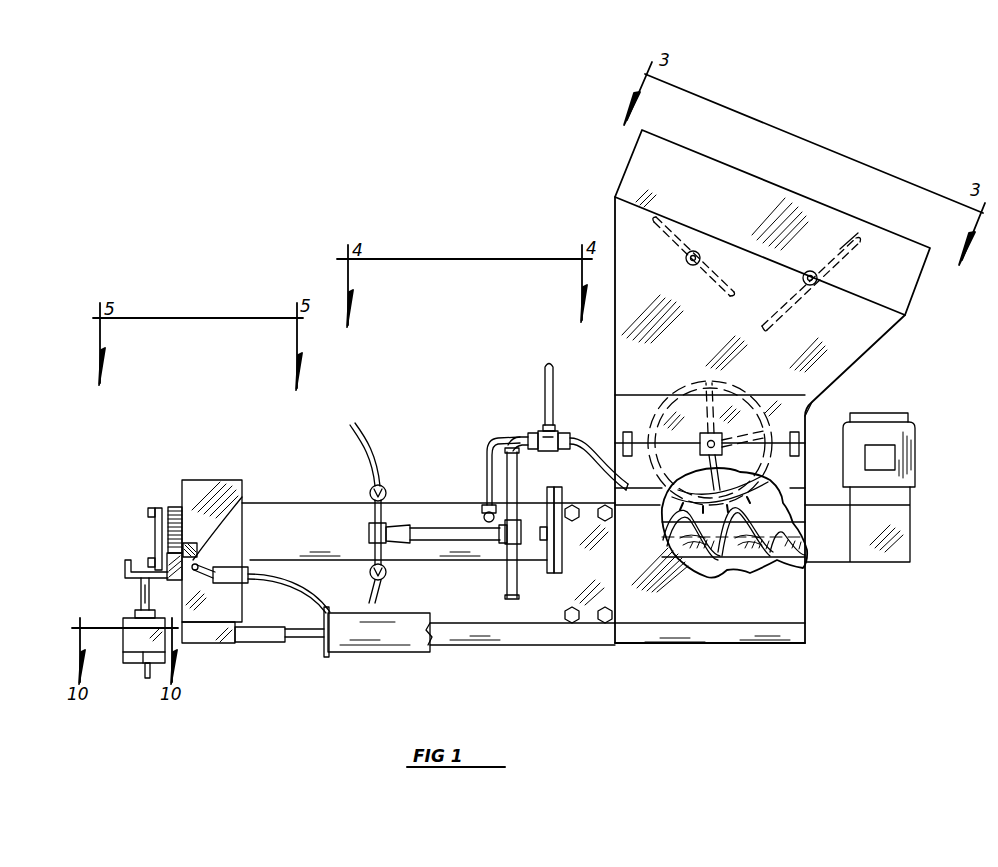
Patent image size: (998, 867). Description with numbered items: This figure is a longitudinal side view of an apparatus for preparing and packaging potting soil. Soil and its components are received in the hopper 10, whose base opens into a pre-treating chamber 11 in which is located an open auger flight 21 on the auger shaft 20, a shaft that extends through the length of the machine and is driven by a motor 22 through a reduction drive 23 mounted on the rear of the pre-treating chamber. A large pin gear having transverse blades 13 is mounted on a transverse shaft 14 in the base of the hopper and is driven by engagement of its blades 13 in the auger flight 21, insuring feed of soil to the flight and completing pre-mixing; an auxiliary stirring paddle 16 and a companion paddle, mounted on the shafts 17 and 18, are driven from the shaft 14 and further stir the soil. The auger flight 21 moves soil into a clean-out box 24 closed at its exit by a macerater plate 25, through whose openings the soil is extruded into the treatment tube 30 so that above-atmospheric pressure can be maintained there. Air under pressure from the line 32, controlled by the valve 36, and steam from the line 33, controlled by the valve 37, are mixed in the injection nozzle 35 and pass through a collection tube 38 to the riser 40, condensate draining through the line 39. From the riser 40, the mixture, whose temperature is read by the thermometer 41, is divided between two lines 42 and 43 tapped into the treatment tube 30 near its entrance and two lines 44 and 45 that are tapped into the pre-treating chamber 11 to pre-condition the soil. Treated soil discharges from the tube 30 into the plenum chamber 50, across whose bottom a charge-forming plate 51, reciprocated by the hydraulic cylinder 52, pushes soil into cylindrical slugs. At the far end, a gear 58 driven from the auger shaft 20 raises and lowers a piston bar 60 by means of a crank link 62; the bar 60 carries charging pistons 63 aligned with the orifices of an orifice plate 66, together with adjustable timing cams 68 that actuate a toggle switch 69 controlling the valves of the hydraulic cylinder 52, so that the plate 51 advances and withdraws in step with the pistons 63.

The hopper 10 is at (945, 302).
The pre-treating chamber 11 is at (803, 456).
The transverse blades 13 is at (790, 488).
The transverse shaft 14 is at (722, 450).
The auxiliary stirring paddle 16 is at (850, 244).
The paddle shaft 17 is at (686, 262).
The paddle shaft 18 is at (813, 285).
The auger shaft 20 is at (790, 600).
The open auger flight 21 is at (735, 567).
The motor 22 is at (912, 448).
The reduction drive 23 is at (905, 543).
The clean-out box 24 is at (605, 582).
The macerater plate 25 is at (553, 573).
The treatment tube 30 is at (472, 470).
The air line 32 is at (372, 453).
The steam line 33 is at (380, 585).
The injection nozzle 35 is at (369, 530).
The valve 36 is at (385, 492).
The valve 37 is at (370, 573).
The collection tube 38 is at (477, 540).
The condensate drain line 39 is at (512, 598).
The riser 40 is at (549, 453).
The thermometer 41 is at (545, 368).
The steam line 42 is at (518, 406).
The steam line 43 is at (489, 513).
The pre-treating steam line 44 is at (606, 418).
The pre-treating steam line 45 is at (590, 455).
The plenum chamber 50 is at (200, 497).
The charge-forming plate 51 is at (262, 643).
The hydraulic cylinder 52 is at (380, 652).
The gear 58 is at (178, 506).
The piston bar 60 is at (125, 572).
The crank link 62 is at (153, 530).
The charging pistons 63 is at (140, 600).
The orifice plate 66 is at (140, 663).
The adjustable timing cam 68 is at (242, 500).
The toggle switch 69 is at (230, 583).